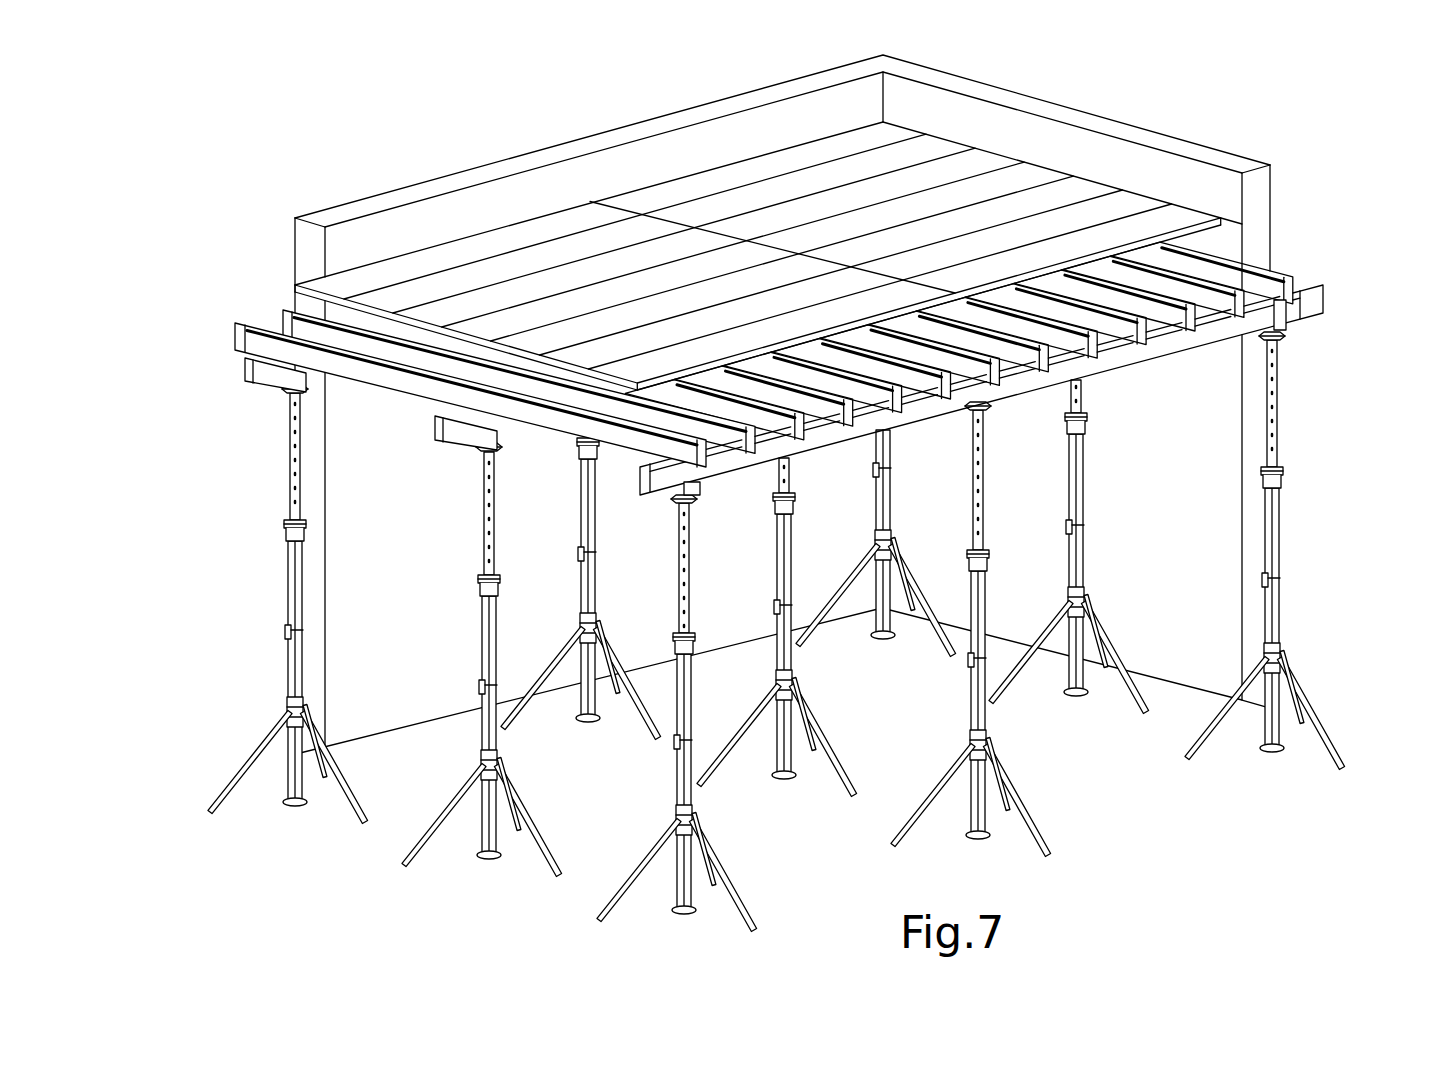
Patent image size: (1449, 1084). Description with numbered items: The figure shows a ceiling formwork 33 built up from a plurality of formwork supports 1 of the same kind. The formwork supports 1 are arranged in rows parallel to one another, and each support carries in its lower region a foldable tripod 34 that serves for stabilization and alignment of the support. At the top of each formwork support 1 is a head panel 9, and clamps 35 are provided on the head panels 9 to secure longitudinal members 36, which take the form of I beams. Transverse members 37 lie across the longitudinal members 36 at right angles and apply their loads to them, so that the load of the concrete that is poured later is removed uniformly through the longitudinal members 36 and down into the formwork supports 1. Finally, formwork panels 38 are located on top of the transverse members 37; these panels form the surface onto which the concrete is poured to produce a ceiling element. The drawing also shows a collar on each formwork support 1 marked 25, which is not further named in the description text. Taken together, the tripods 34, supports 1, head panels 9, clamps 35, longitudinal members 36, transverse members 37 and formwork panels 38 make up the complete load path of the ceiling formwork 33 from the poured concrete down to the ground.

The formwork support 1 is at (290, 617).
The head panel 9 is at (287, 395).
The adjusting collar 25 is at (498, 580).
The ceiling formwork 33 is at (620, 313).
The foldable tripod 34 is at (255, 770).
The clamp 35 is at (283, 390).
The longitudinal member 36 is at (268, 380).
The transverse member 37 is at (235, 335).
The formwork panel 38 is at (572, 220).